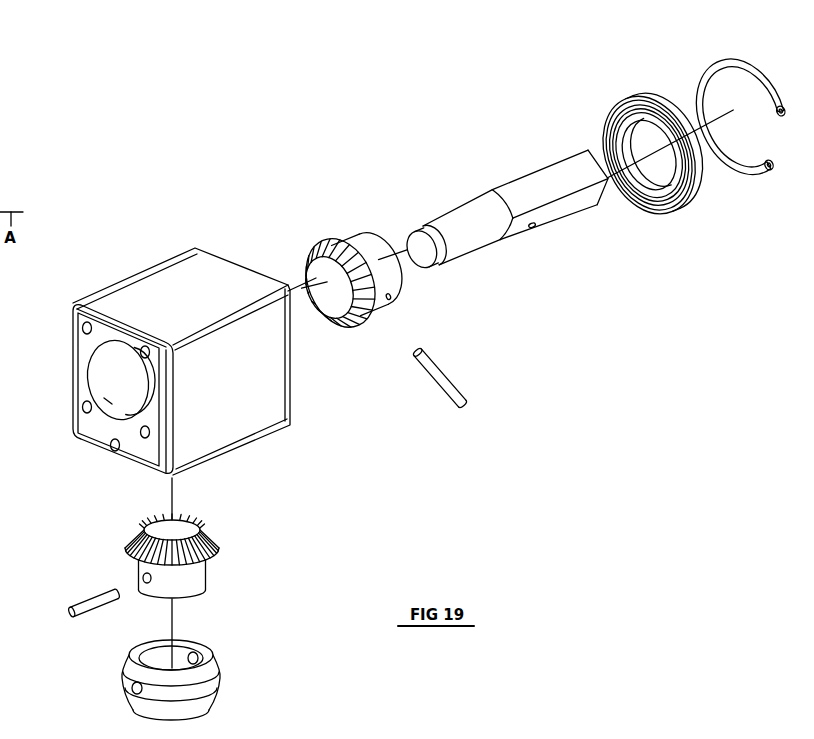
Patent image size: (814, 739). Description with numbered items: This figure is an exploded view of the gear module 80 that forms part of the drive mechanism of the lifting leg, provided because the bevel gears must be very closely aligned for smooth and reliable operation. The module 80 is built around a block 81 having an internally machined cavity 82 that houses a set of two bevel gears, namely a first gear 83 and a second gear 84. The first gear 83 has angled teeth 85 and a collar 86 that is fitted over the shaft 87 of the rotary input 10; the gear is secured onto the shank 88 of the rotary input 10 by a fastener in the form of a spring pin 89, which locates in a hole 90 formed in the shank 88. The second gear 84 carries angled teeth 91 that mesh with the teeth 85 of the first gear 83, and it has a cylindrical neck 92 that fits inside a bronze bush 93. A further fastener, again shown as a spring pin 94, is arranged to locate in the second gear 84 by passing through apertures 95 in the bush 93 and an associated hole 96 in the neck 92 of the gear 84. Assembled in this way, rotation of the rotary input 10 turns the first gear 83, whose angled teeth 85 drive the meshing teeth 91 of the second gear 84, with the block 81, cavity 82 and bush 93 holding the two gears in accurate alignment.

The rotary input 10 is at (509, 206).
The gear module 80 is at (156, 334).
The block 81 is at (106, 348).
The internally machined cavity 82 is at (89, 380).
The first gear 83 is at (332, 256).
The second gear 84 is at (168, 560).
The angled teeth 85 is at (357, 343).
The collar 86 is at (406, 273).
The shaft 87 is at (448, 214).
The shank 88 is at (557, 208).
The spring pin 89 is at (475, 378).
The hole 90 is at (551, 263).
The angled teeth 91 is at (141, 520).
The cylindrical neck 92 is at (179, 602).
The bronze bush 93 is at (170, 676).
The spring pin 94 is at (69, 578).
The apertures 95 is at (167, 676).
The hole 96 is at (118, 609).